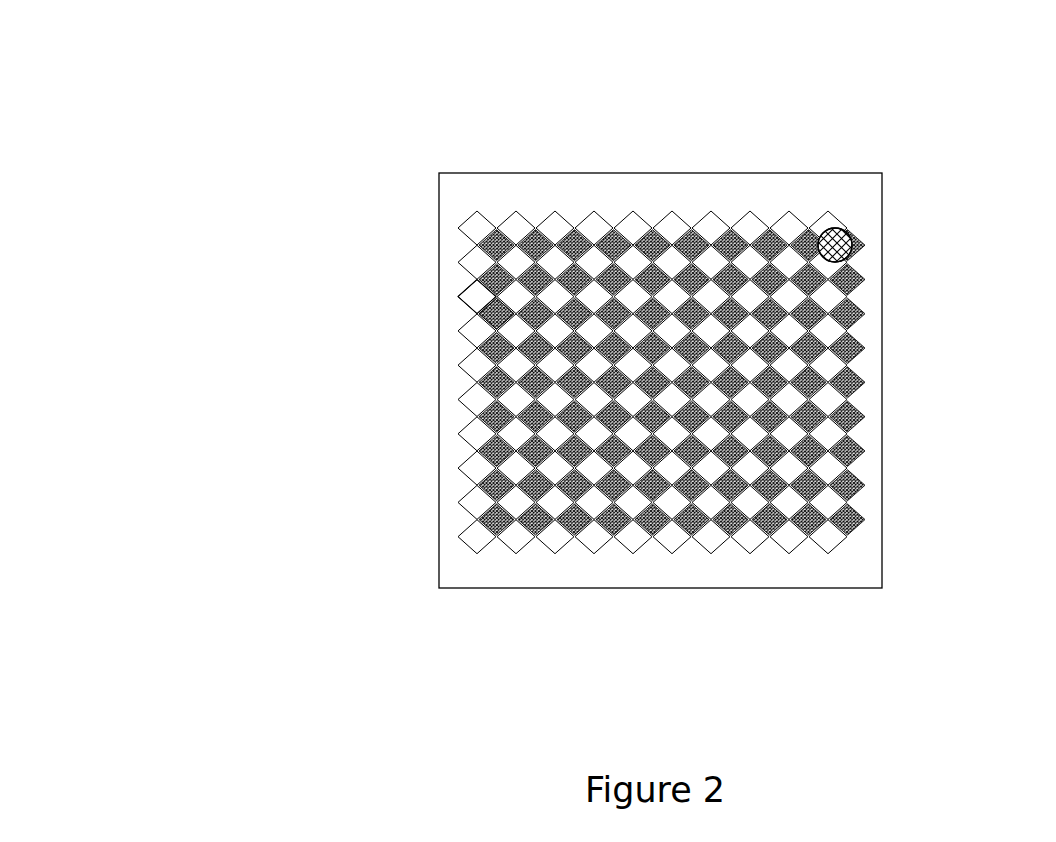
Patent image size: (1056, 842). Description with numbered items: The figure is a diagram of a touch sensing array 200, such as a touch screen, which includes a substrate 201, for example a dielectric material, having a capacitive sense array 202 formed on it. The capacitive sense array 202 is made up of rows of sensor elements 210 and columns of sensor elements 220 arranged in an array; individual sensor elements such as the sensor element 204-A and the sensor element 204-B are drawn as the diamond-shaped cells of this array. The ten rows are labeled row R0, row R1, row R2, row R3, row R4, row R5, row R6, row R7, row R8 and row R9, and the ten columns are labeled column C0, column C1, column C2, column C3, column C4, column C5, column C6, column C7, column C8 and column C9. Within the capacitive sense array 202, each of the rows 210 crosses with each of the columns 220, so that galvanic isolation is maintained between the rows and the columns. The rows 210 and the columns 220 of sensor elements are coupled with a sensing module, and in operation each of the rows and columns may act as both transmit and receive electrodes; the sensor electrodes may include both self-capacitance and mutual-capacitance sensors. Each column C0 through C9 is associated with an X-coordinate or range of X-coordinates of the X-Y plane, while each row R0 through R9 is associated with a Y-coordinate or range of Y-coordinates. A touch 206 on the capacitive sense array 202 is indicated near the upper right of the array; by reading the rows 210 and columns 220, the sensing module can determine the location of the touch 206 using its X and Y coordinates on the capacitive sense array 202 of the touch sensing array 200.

The touch sensing array 200 is at (222, 92).
The substrate 201 is at (439, 182).
The capacitive sense array 202 is at (703, 204).
The sensor element 204-A is at (458, 297).
The sensor element 204-B is at (478, 314).
The touch 206 is at (851, 234).
The rows of sensor elements 210 is at (746, 382).
The columns of sensor elements 220 is at (672, 476).
The row R0 is at (848, 228).
The row R1 is at (848, 262).
The row R2 is at (848, 297).
The row R3 is at (848, 331).
The row R4 is at (848, 365).
The row R5 is at (848, 400).
The row R6 is at (848, 434).
The row R7 is at (848, 468).
The row R8 is at (848, 502).
The row R9 is at (848, 537).
The column C0 is at (848, 537).
The column C1 is at (808, 537).
The column C2 is at (770, 537).
The column C3 is at (730, 537).
The column C4 is at (692, 537).
The column C5 is at (652, 537).
The column C6 is at (614, 537).
The column C7 is at (574, 537).
The column C8 is at (536, 537).
The column C9 is at (496, 537).